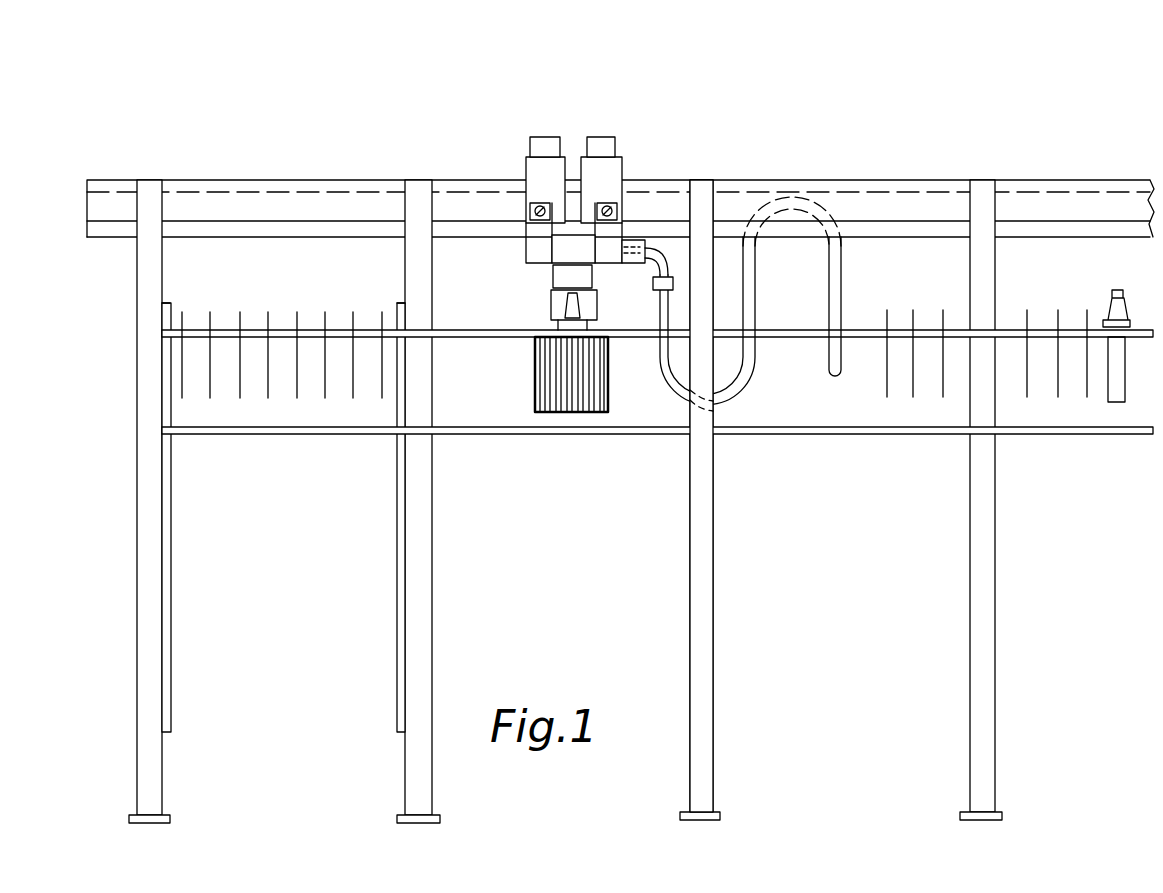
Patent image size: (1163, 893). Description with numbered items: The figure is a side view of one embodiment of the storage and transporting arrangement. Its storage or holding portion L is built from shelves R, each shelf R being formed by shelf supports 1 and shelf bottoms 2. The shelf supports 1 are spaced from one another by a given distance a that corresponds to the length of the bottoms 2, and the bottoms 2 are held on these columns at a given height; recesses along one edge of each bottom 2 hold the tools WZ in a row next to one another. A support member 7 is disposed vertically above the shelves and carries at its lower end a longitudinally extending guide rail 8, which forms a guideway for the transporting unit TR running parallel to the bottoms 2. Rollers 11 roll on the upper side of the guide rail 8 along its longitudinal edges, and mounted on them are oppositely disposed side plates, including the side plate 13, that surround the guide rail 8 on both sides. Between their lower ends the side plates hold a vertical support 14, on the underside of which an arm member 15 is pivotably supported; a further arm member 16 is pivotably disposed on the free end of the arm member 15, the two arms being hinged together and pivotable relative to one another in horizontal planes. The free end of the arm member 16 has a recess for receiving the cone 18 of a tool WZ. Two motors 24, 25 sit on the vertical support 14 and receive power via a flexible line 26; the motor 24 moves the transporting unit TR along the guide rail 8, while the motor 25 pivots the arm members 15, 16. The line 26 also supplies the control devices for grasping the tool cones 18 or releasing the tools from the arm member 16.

The shelf supports 1 is at (147, 655).
The bottoms of the shelves 2 is at (252, 317).
The support member 7 is at (190, 215).
The guide rail 8 is at (313, 233).
The rollers 11 is at (613, 213).
The side plate 13 is at (603, 252).
The vertical support 14 is at (572, 250).
The arm member 15 is at (567, 272).
The arm member 16 is at (587, 305).
The cone 18 is at (563, 312).
The motor 24 is at (538, 177).
The motor 25 is at (605, 180).
The flexible line 26 is at (742, 378).
The shelf R is at (308, 180).
The transporting unit TR is at (565, 133).
The storage or holding portion L is at (287, 400).
The tools WZ is at (353, 387).
The distance a is at (970, 639).